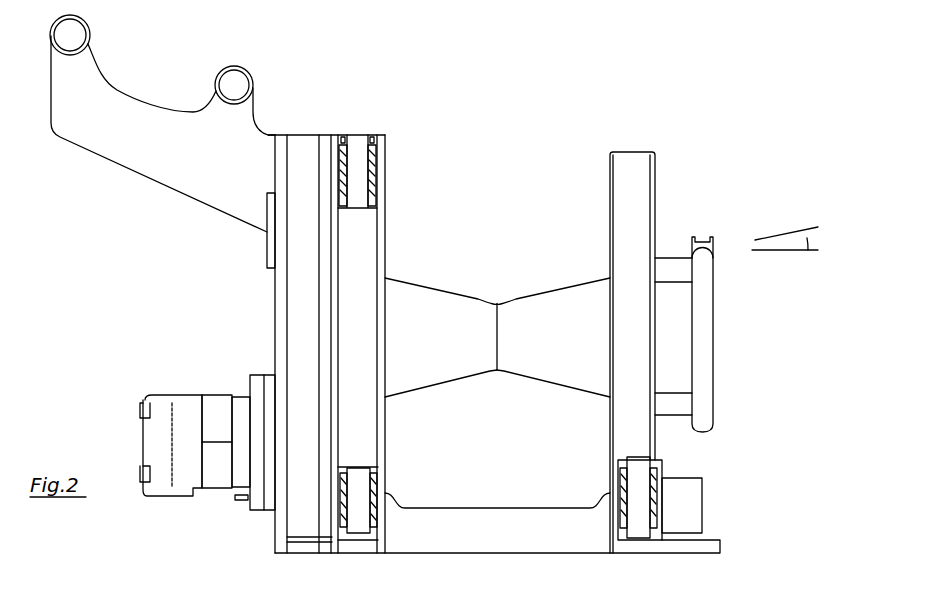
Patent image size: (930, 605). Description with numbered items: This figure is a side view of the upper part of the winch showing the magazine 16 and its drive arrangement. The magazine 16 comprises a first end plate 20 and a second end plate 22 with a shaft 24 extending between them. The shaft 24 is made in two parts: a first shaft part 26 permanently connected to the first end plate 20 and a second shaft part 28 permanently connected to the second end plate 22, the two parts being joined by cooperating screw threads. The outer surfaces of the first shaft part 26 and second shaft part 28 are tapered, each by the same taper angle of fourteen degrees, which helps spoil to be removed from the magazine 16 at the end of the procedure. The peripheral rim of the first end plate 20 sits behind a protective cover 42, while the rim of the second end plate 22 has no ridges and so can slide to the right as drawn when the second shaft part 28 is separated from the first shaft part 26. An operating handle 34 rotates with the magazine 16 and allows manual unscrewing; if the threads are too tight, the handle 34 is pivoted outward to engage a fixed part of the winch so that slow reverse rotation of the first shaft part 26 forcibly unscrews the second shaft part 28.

The magazine 16 is at (616, 122).
The first end plate 20 is at (385, 228).
The second end plate 22 is at (610, 153).
The shaft 24 is at (503, 372).
The first shaft part 26 is at (458, 312).
The second shaft part 28 is at (568, 302).
The operating handle 34 is at (707, 323).
The protective cover 42 is at (386, 141).